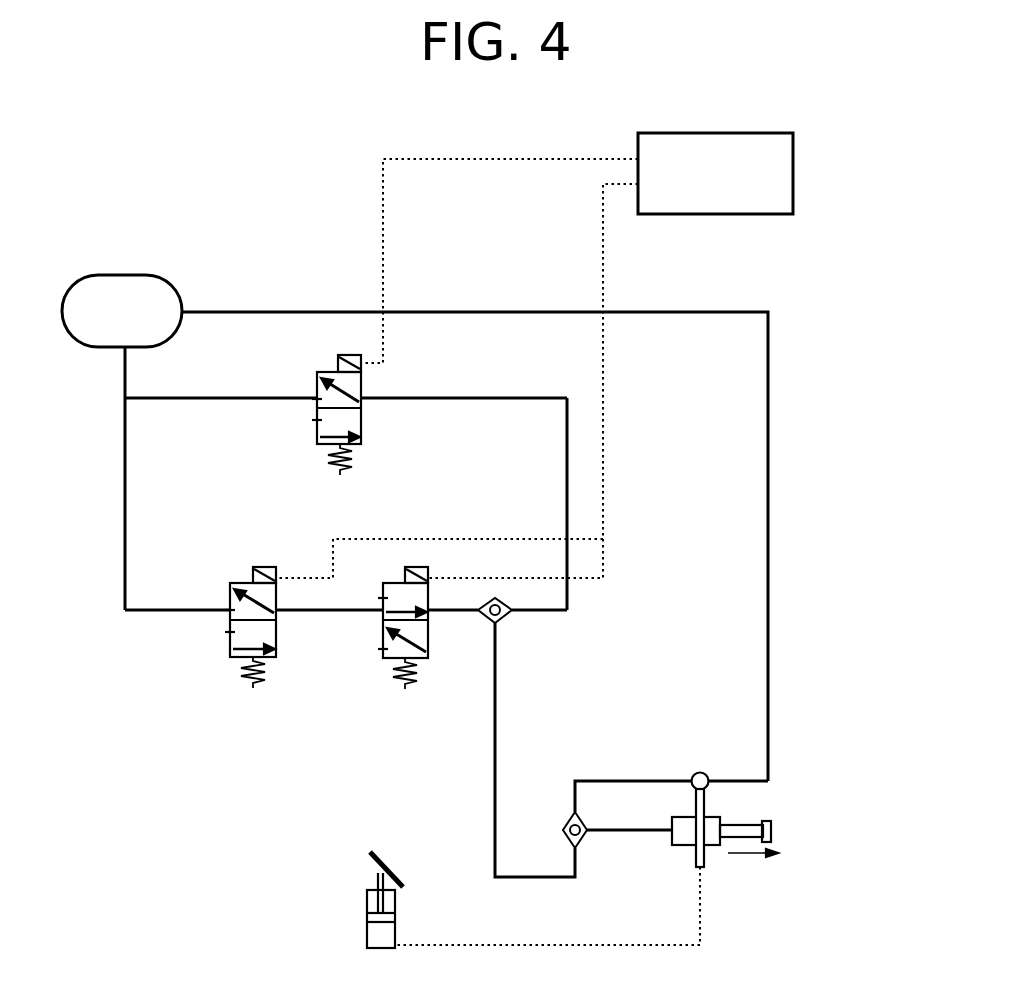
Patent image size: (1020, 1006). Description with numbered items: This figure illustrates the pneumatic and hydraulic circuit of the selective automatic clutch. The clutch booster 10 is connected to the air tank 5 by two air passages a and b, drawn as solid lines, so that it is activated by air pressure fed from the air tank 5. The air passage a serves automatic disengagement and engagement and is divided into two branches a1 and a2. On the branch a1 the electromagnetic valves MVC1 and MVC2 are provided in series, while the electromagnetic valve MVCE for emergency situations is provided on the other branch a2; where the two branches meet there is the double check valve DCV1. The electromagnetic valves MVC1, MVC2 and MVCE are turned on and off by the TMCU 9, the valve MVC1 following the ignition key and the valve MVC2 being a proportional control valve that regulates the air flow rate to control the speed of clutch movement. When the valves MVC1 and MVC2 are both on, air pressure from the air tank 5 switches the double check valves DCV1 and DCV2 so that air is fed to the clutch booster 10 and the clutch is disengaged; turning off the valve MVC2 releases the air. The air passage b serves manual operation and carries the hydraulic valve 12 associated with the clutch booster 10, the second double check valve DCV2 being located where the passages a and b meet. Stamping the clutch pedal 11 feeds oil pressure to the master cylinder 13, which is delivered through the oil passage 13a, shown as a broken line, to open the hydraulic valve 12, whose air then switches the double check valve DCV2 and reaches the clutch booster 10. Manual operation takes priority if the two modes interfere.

The air tank 5 is at (133, 335).
The TMCU 9 is at (724, 193).
The air passage b is at (690, 295).
The air passage a is at (176, 660).
The branch a1 is at (125, 459).
The branch a2 is at (232, 397).
The electromagnetic valve MVCE is at (346, 429).
The electromagnetic valve MVC1 is at (262, 647).
The electromagnetic valve MVC2 is at (407, 645).
The double check valve DCV1 is at (508, 622).
The double check valve DCV2 is at (566, 818).
The clutch booster 10 is at (680, 848).
The clutch pedal 11 is at (384, 858).
The hydraulic valve 12 is at (699, 771).
The master cylinder 13 is at (365, 934).
The oil passage 13a is at (548, 947).